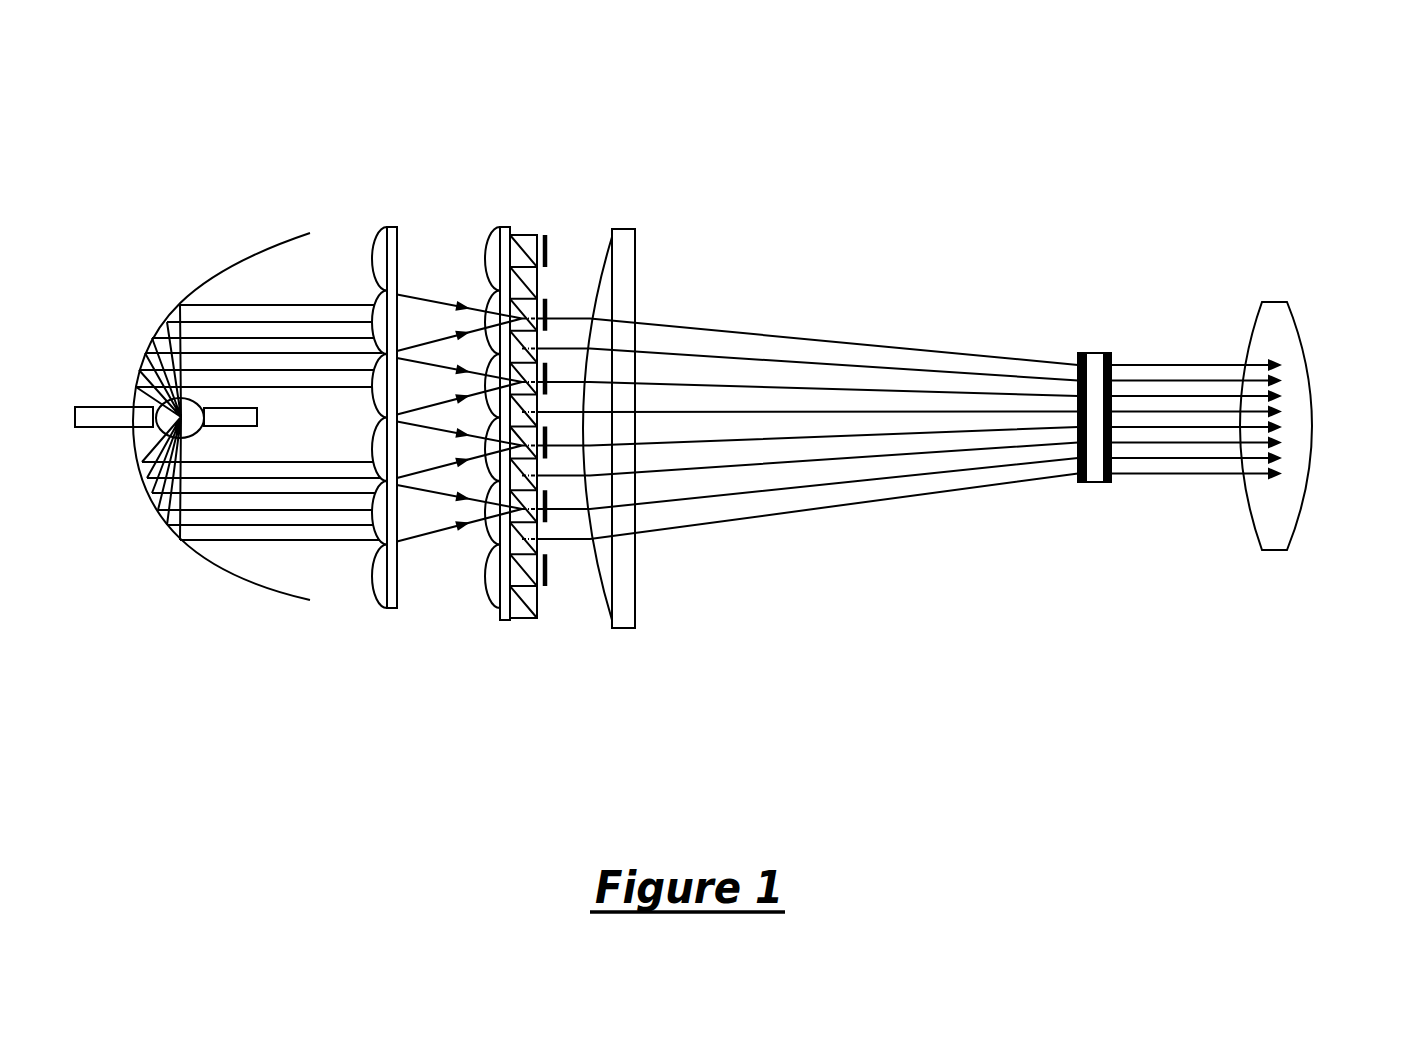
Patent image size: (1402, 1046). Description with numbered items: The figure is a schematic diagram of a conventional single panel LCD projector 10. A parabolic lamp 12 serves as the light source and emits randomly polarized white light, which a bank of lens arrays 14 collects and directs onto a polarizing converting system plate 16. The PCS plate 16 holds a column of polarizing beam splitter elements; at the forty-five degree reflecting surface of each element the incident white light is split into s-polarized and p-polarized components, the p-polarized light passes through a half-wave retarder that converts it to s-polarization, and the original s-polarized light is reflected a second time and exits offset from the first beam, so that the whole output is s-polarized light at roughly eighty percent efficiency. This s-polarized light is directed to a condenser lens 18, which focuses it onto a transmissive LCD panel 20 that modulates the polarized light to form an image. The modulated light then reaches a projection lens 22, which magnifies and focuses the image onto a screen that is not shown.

The LCD projector 10 is at (222, 153).
The parabolic lamp 12 is at (227, 582).
The bank of lens arrays 14 is at (391, 612).
The polarizing converting system (PCS) plate 16 is at (507, 620).
The condenser lens 18 is at (615, 628).
The LCD panel 20 is at (1093, 483).
The projection lens 22 is at (1297, 527).